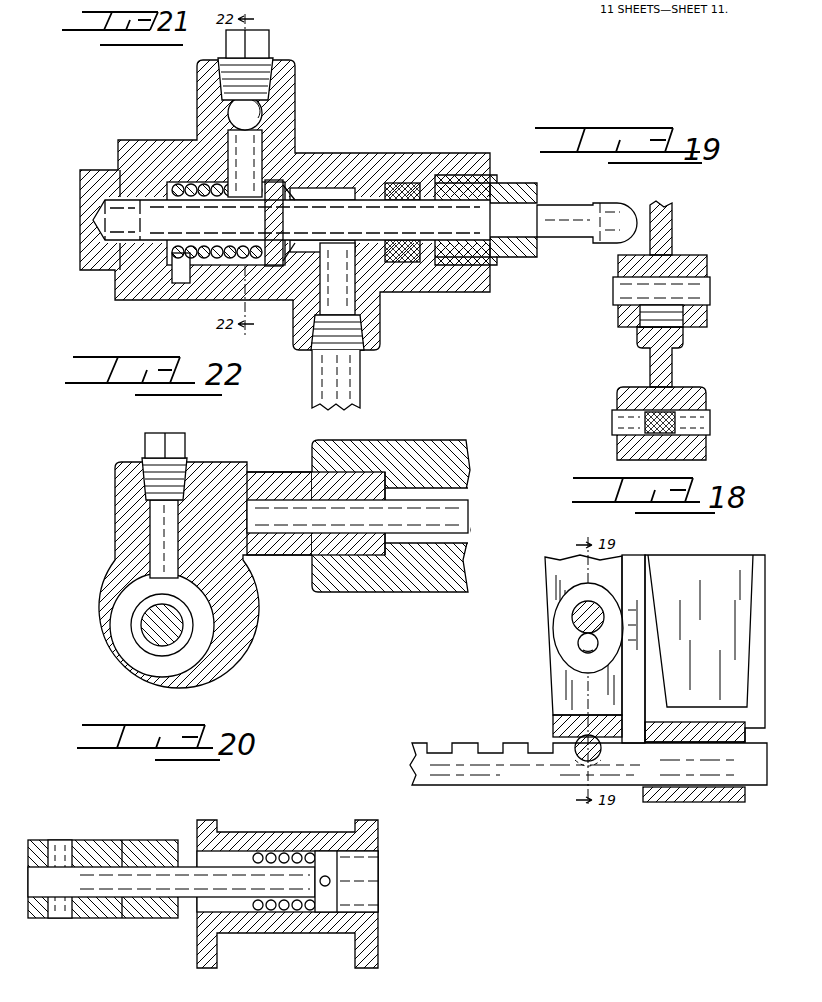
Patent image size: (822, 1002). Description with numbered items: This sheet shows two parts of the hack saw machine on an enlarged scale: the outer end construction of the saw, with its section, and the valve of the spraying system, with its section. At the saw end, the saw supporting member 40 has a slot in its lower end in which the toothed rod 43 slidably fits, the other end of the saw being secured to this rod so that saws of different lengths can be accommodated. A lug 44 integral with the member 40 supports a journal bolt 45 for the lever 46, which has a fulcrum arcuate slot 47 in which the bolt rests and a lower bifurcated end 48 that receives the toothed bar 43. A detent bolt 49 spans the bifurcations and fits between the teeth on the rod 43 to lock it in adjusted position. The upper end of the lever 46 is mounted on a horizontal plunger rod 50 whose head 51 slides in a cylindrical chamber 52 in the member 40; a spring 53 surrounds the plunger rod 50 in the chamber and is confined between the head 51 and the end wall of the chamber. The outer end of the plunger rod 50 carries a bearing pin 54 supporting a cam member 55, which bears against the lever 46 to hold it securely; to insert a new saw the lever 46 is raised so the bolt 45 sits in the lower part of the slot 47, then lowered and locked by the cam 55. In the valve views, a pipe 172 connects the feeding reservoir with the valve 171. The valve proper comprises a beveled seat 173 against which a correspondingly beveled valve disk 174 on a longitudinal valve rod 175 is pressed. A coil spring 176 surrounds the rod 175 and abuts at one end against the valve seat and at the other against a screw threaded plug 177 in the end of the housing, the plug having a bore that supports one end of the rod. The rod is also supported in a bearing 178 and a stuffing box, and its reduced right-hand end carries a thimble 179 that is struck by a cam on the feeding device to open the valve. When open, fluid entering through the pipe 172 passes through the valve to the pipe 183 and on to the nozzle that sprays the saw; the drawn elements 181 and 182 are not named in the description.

In FIG. 21, the valve 171 is at (344, 166).
In FIG. 21, the pipe 172 is at (258, 108).
In FIG. 22, the pipe 172 is at (425, 452).
In FIG. 21, the beveled seat 173 is at (294, 154).
In FIG. 21, the beveled valve disk 174 is at (252, 247).
In FIG. 21, the valve rod 175 is at (291, 220).
In FIG. 21, the coil spring 176 is at (182, 186).
In FIG. 21, the screw threaded plug 177 is at (90, 190).
In FIG. 21, the bearing 178 is at (378, 254).
In FIG. 21, the thimble 179 is at (570, 205).
In FIG. 22, the shaft 181 is at (285, 515).
In FIG. 22, the stem 182 is at (165, 548).
In FIG. 21, the pipe 183 is at (356, 393).
In FIG. 18, the saw supporting member 40 is at (718, 576).
In FIG. 18, the toothed rod 43 is at (476, 780).
In FIG. 18, the lug 44 is at (625, 598).
In FIG. 19, the journal bolt 45 is at (627, 292).
In FIG. 18, the journal bolt 45 is at (578, 620).
In FIG. 18, the lever 46 is at (560, 688).
In FIG. 20, the lever 46 is at (150, 848).
In FIG. 18, the fulcrum arcuate slot 47 is at (585, 648).
In FIG. 19, the bifurcated end 48 is at (700, 398).
In FIG. 18, the bifurcated end 48 is at (560, 740).
In FIG. 19, the detent bolt 49 is at (626, 425).
In FIG. 18, the detent bolt 49 is at (578, 758).
In FIG. 20, the plunger rod 50 is at (195, 882).
In FIG. 20, the head 51 is at (338, 895).
In FIG. 20, the cylindrical chamber 52 is at (358, 900).
In FIG. 20, the spring 53 is at (278, 858).
In FIG. 20, the bearing pin 54 is at (53, 840).
In FIG. 20, the cam member 55 is at (102, 910).